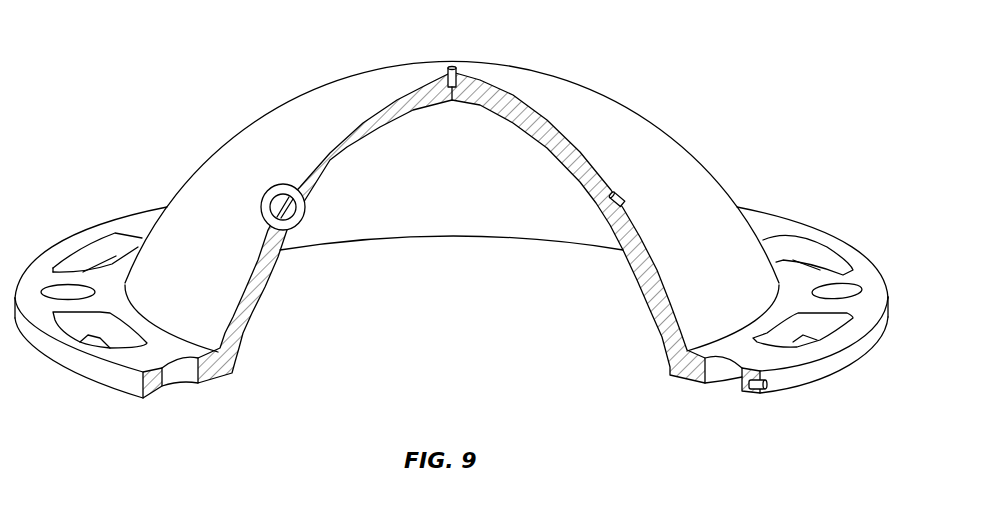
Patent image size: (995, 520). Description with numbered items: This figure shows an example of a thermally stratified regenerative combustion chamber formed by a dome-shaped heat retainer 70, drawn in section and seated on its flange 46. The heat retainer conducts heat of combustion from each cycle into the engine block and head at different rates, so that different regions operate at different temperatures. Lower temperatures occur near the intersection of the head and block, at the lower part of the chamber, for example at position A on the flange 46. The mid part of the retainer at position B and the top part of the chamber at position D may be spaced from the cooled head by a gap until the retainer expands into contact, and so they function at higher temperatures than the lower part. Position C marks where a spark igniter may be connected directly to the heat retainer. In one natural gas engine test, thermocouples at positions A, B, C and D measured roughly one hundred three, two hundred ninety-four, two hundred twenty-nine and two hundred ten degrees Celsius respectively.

The dome 70 is at (620, 61).
The flange 46 is at (793, 297).
The position A is at (753, 392).
The position B is at (636, 191).
The position C is at (314, 212).
The position D is at (455, 58).